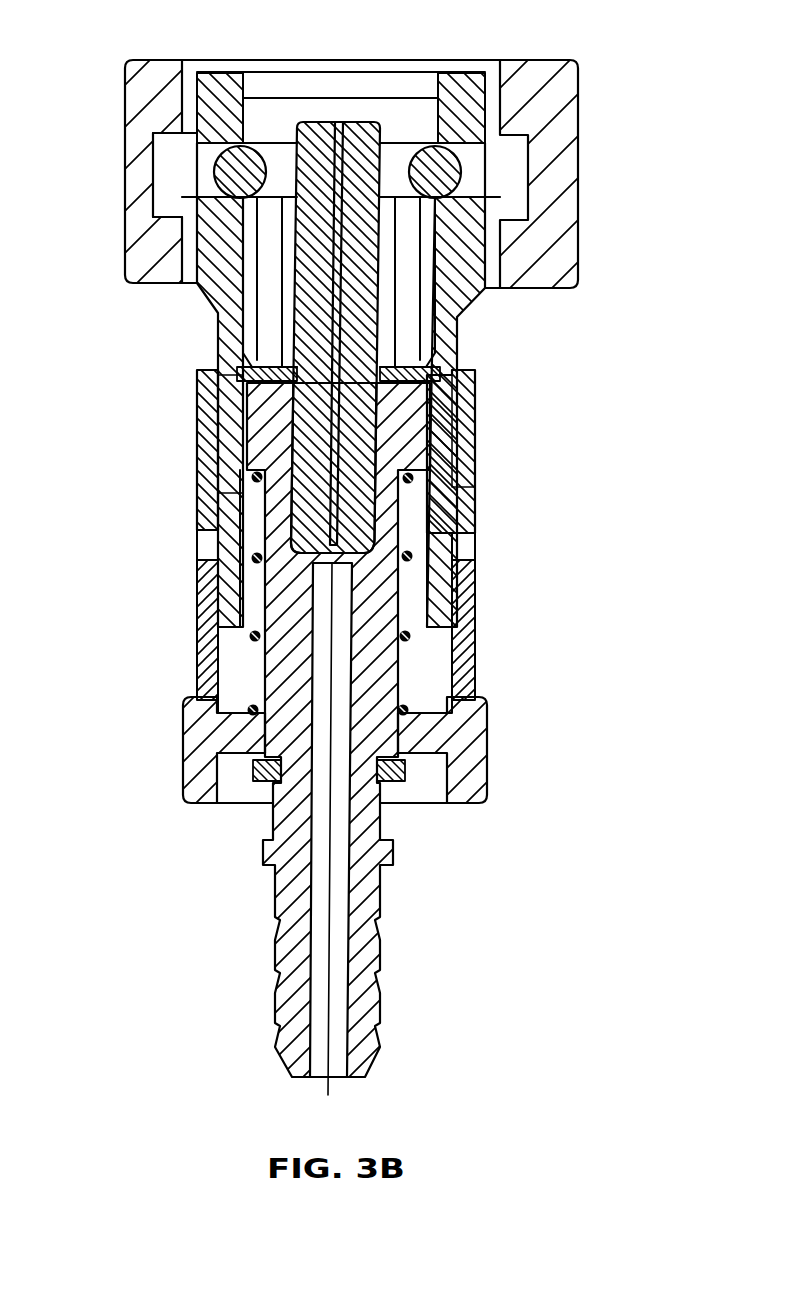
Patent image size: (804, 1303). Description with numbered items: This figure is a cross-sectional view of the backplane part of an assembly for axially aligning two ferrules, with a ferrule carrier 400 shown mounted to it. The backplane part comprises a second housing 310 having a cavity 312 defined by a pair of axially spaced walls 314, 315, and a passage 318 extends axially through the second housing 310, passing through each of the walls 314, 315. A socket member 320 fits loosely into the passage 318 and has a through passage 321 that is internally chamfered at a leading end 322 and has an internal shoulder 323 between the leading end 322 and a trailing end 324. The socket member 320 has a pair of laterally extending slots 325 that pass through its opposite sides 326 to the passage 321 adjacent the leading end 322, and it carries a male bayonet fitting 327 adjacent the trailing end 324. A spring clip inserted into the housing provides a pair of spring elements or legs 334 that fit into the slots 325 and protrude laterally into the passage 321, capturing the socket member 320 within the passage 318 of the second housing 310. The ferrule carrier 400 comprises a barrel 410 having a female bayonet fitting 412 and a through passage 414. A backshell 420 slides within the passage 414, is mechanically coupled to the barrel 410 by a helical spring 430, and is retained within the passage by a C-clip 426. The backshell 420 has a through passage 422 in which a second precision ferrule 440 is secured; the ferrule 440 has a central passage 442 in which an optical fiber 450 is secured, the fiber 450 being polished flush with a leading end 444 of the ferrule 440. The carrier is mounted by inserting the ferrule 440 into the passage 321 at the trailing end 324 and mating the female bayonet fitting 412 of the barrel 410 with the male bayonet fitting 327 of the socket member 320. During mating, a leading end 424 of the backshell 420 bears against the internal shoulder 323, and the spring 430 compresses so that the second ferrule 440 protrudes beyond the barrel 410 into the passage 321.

The second housing 310 is at (580, 108).
The cavity 312 is at (517, 190).
The wall 314 is at (525, 220).
The wall 315 is at (530, 150).
The passage 318 is at (455, 305).
The socket member 320 is at (432, 310).
The through passage 321 is at (428, 340).
The leading end 322 is at (445, 88).
The internal shoulder 323 is at (478, 412).
The trailing end 324 is at (466, 90).
The laterally extending slots 325 is at (212, 176).
The opposite sides 326 is at (222, 282).
The male bayonet fitting 327 is at (480, 510).
The spring elements or legs 334 is at (258, 146).
The ferrule carrier 400 is at (487, 752).
The barrel 410 is at (476, 645).
The female bayonet fitting 412 is at (476, 566).
The through passage 414 is at (432, 598).
The backshell 420 is at (405, 668).
The through passage 422 is at (290, 490).
The leading end 424 is at (458, 430).
The C-clip 426 is at (400, 783).
The helical spring 430 is at (262, 562).
The second precision ferrule 440 is at (312, 312).
The central passage 442 is at (330, 422).
The leading end 444 is at (318, 122).
The optical fiber 450 is at (330, 810).